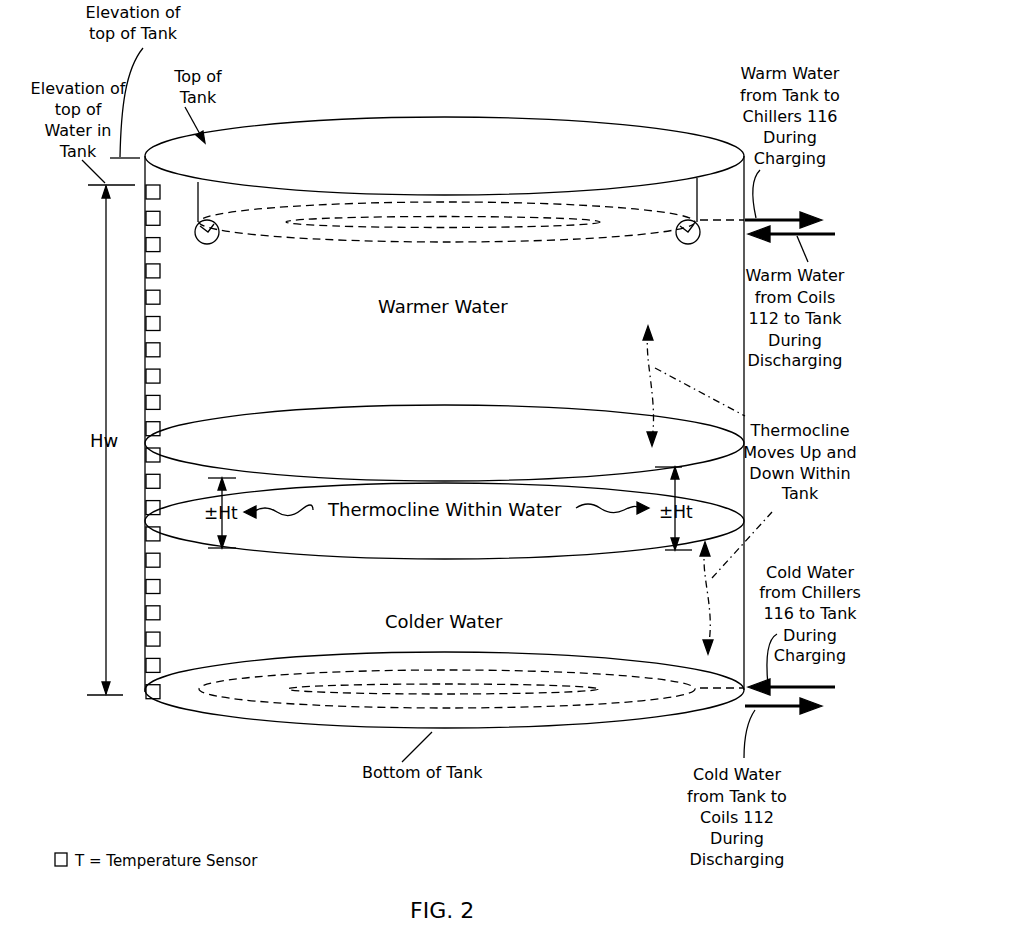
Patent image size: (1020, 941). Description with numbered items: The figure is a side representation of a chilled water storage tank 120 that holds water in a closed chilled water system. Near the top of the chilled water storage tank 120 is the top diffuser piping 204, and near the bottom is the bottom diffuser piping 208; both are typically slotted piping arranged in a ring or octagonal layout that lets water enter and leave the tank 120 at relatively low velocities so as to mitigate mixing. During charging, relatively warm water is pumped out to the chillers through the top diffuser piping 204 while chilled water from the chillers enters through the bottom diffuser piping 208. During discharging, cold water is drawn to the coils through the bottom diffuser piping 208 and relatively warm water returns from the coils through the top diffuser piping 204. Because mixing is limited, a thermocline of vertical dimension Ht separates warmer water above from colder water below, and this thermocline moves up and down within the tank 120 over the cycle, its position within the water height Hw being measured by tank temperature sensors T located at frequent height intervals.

The chilled water storage tank 120 is at (304, 101).
The top diffuser piping 204 is at (290, 246).
The bottom diffuser piping 208 is at (268, 712).